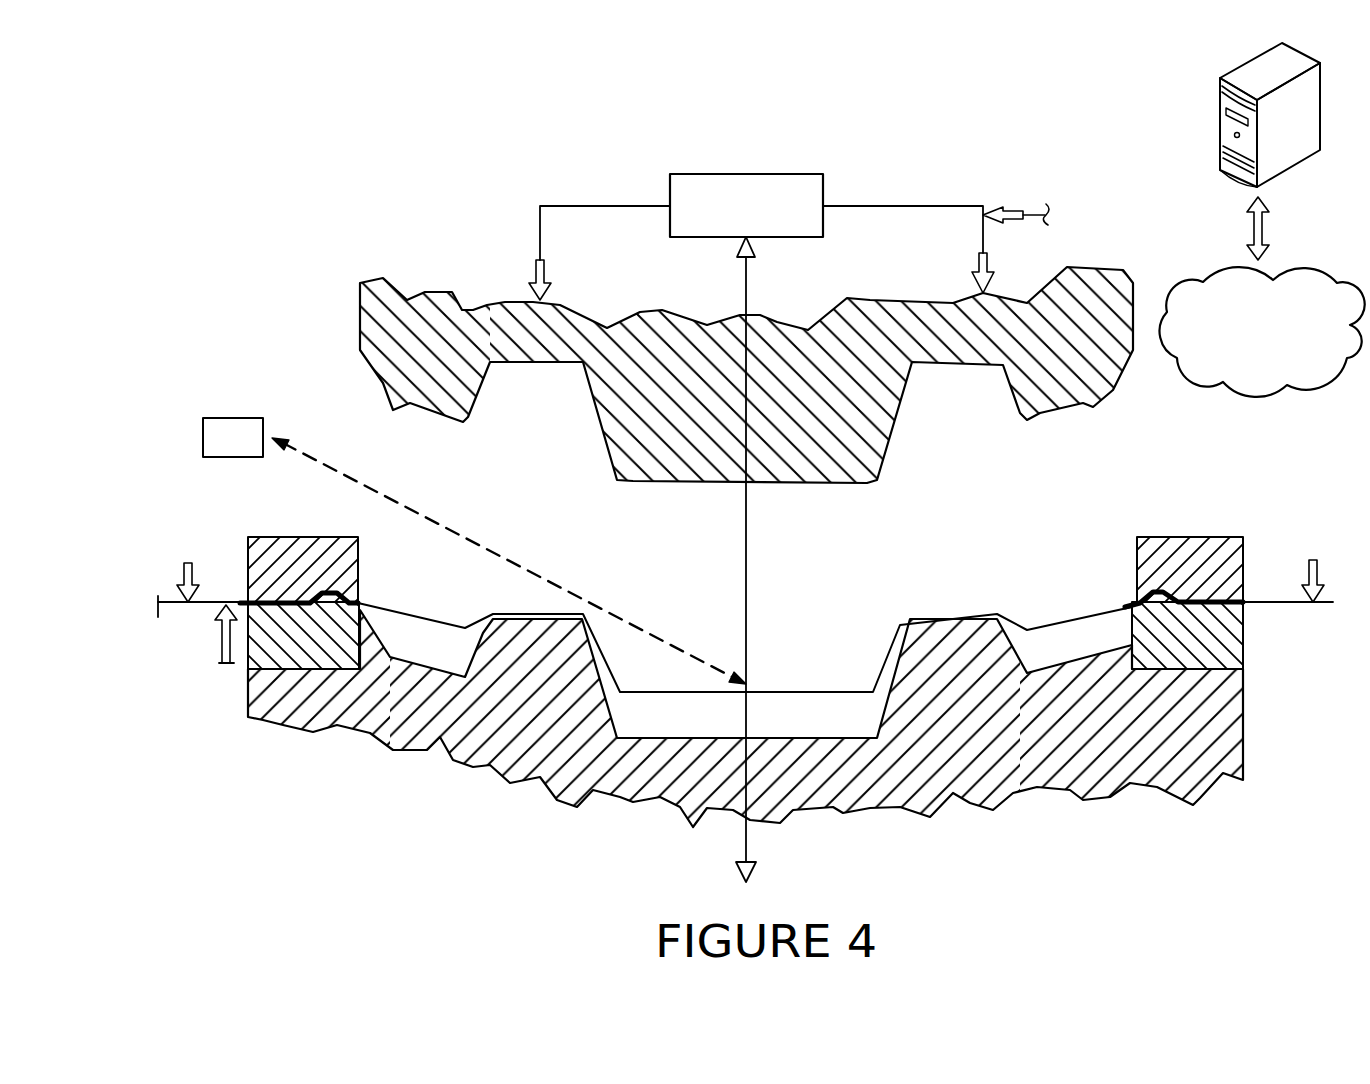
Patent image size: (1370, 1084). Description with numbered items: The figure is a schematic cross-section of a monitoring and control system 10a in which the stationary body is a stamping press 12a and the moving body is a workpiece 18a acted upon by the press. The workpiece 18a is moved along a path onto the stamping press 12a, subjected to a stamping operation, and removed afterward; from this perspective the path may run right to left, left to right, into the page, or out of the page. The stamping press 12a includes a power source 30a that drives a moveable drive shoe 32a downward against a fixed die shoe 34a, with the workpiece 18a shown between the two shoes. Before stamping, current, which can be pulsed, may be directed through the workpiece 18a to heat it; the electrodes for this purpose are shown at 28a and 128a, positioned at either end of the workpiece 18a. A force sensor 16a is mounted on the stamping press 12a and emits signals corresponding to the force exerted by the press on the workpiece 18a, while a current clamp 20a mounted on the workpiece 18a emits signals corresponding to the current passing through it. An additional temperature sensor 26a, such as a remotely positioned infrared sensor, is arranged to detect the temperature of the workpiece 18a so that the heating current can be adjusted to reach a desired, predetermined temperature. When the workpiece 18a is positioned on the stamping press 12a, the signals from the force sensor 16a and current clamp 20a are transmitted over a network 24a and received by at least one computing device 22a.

The monitoring and control system 10a is at (335, 143).
The stationary body (stamping press) 12a is at (310, 287).
The force sensor 16a is at (1010, 207).
The moving body (workpiece) 18a is at (442, 620).
The current clamp 20a is at (221, 634).
The computing device 22a is at (1233, 115).
The network 24a is at (1213, 267).
The temperature sensor 26a is at (247, 418).
The electrode 28a is at (188, 560).
The power source 30a is at (780, 173).
The moveable drive shoe 32a is at (495, 312).
The fixed die shoe 34a is at (438, 737).
The electrode 128a is at (1313, 560).